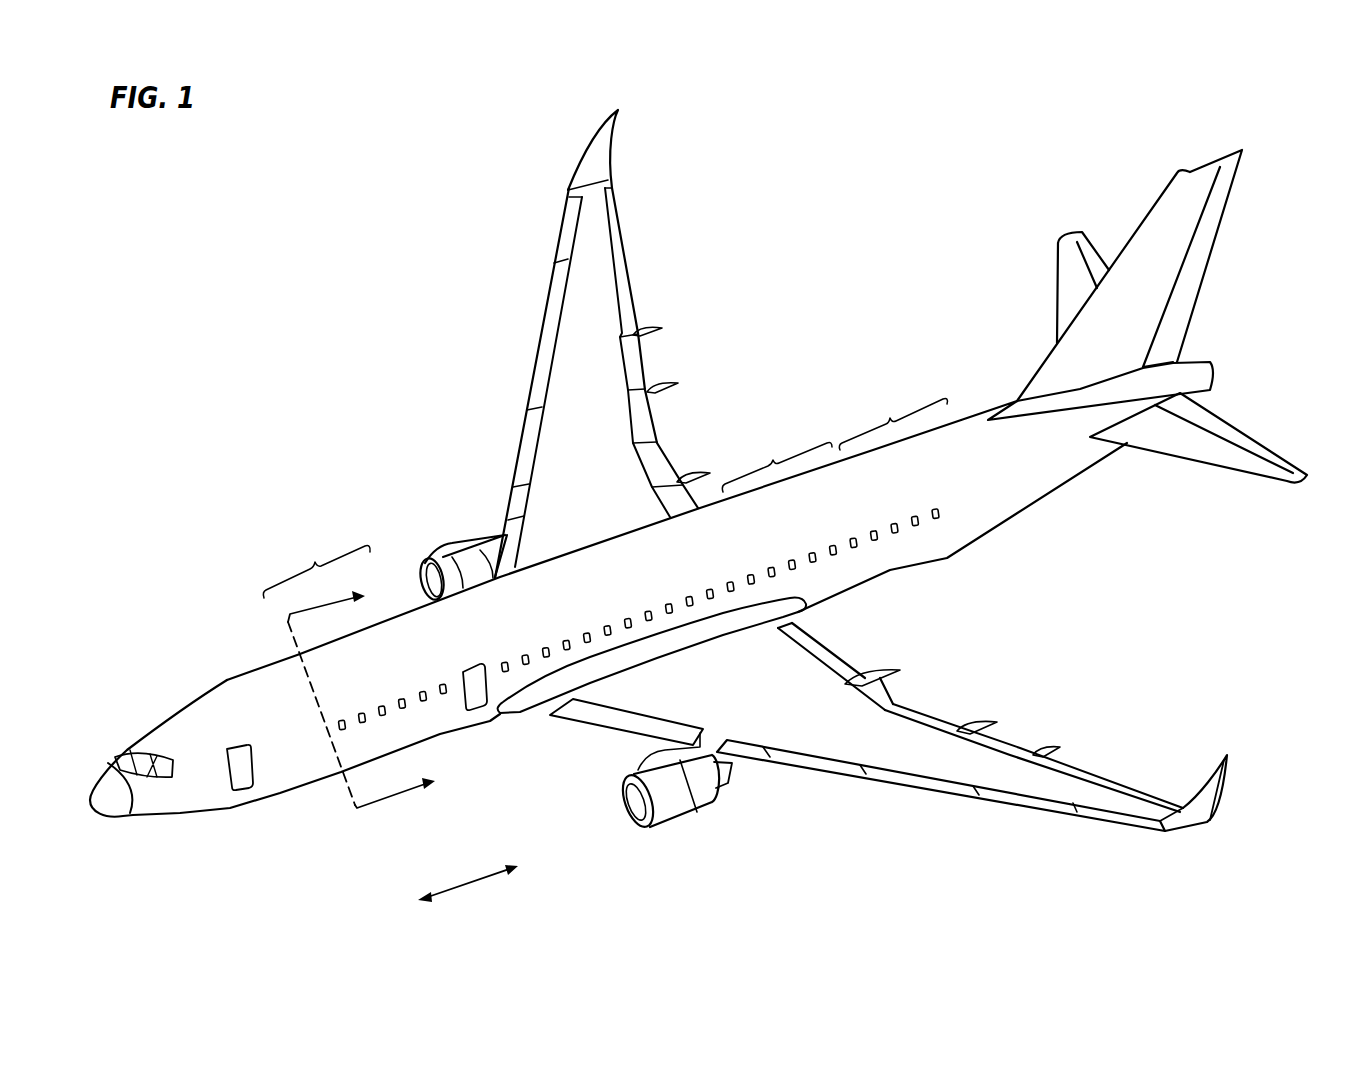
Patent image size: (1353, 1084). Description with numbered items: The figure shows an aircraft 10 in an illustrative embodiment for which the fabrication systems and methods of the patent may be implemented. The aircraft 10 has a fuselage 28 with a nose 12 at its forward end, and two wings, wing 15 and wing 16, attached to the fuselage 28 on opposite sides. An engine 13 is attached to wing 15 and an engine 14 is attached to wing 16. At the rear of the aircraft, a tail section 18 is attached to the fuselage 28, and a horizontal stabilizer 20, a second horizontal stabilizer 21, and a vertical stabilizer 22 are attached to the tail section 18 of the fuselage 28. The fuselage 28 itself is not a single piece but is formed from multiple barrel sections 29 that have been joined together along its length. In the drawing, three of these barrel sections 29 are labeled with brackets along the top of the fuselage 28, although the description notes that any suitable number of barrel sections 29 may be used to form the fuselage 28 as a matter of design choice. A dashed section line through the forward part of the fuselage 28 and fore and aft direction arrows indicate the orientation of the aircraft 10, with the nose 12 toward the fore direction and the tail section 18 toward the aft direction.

The aircraft 10 is at (302, 349).
The nose 12 is at (228, 690).
The engine 13 is at (434, 553).
The engine 14 is at (707, 792).
The wing 15 is at (613, 182).
The wing 16 is at (1157, 830).
The tail section 18 is at (1139, 480).
The horizontal stabilizer 20 is at (1065, 275).
The horizontal stabilizer 21 is at (1220, 453).
The vertical stabilizer 22 is at (1180, 192).
The fuselage 28 is at (890, 567).
The barrel sections 29 is at (605, 494).